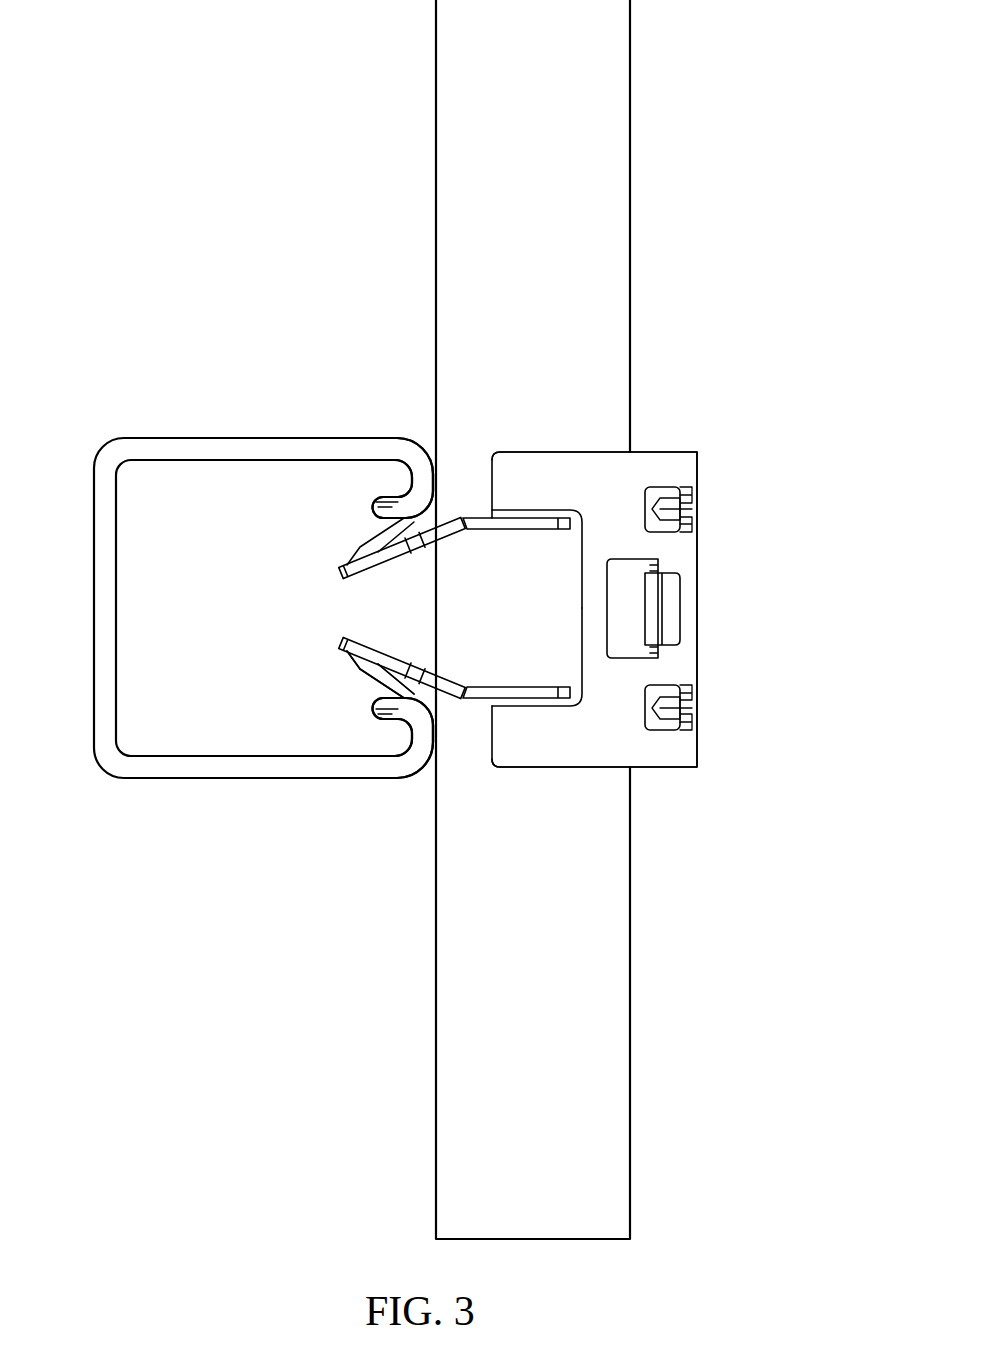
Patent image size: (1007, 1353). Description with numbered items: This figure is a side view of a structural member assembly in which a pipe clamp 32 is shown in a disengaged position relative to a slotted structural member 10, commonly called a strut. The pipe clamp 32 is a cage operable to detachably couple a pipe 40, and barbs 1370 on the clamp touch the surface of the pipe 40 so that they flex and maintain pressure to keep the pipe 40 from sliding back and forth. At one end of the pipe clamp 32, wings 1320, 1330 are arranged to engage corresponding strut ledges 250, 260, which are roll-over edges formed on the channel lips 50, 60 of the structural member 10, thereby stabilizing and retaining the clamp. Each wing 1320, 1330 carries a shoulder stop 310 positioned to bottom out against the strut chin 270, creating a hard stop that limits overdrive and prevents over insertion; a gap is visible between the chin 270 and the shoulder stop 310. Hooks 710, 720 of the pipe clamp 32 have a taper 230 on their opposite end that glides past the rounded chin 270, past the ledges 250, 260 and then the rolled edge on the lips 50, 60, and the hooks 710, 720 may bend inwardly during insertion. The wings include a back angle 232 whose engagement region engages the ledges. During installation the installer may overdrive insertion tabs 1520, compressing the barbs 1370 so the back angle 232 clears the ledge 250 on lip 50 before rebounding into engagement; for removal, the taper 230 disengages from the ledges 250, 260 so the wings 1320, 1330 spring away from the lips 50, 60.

The slotted structural member 10 is at (103, 450).
The pipe 40 is at (630, 214).
The lip 50 is at (383, 722).
The lip 60 is at (380, 500).
The taper 230 is at (365, 548).
The back angle 232 is at (398, 697).
The strut ledge 250 is at (372, 708).
The strut ledge 260 is at (378, 503).
The strut chin 270 is at (432, 463).
The shoulder stop 310 is at (502, 465).
The hook 710 is at (406, 532).
The hook 720 is at (372, 673).
The wing 1320 is at (452, 535).
The wing 1330 is at (455, 683).
The barb 1370 is at (697, 508).
The insertion tab 1520 is at (662, 609).
The pipe clamp 32 is at (767, 657).